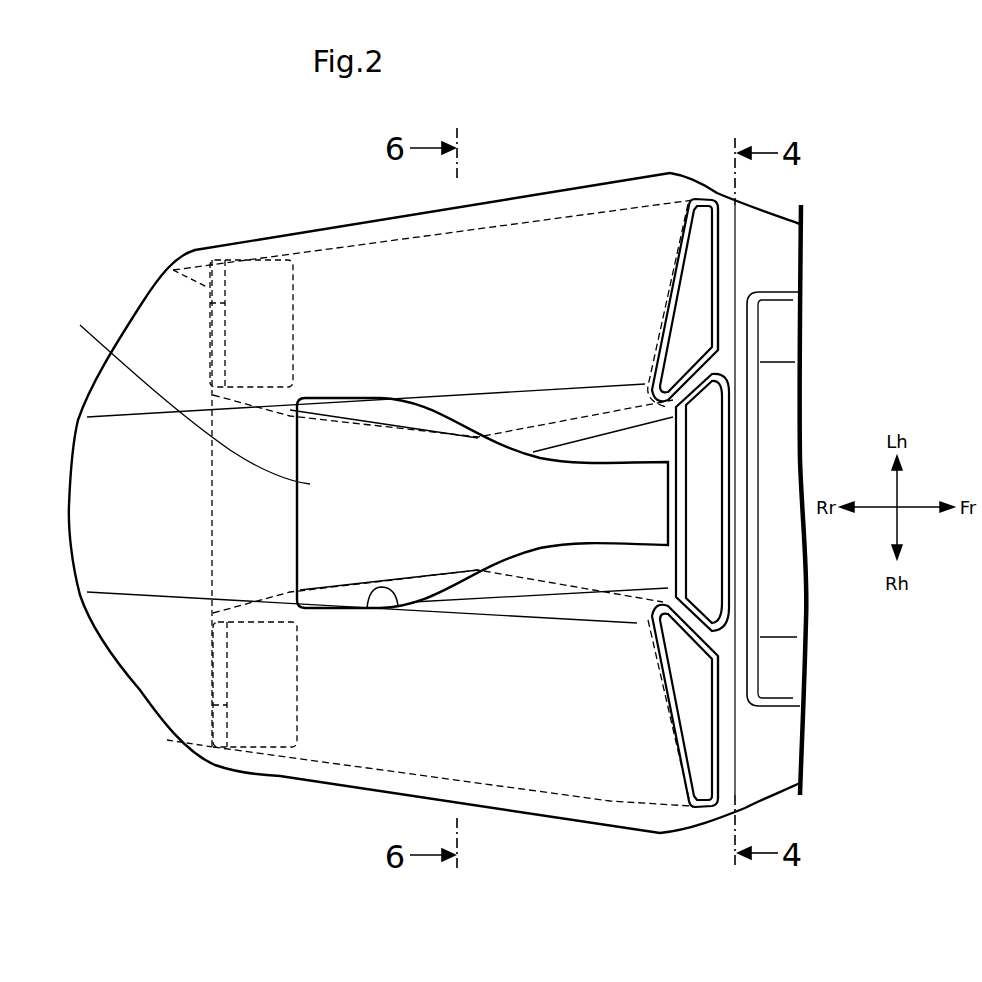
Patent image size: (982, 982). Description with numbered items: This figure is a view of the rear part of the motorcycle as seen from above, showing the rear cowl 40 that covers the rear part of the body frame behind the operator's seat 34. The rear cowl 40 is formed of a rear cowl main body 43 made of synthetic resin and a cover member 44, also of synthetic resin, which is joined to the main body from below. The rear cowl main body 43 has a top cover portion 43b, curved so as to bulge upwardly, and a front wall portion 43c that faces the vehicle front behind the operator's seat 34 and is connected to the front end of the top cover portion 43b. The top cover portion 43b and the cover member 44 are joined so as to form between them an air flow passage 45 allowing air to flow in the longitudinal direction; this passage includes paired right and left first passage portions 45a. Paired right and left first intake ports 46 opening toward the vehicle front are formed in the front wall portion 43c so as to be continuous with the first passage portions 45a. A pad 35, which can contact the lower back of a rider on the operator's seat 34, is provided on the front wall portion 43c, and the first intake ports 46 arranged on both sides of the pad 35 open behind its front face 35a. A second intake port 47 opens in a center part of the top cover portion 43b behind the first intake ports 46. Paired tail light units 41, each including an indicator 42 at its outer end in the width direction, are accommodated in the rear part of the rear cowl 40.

The operator's seat 34 is at (777, 462).
The pad 35 is at (683, 488).
The front face of the pad 35a is at (720, 572).
The rear cowl 40 is at (402, 503).
The tail light unit 41 is at (293, 338).
The indicator 42 is at (172, 268).
The rear cowl main body 43 is at (136, 295).
The top cover portion 43b is at (523, 203).
The front wall portion 43c is at (732, 372).
The cover member 44 is at (176, 397).
The air flow passage 45 is at (725, 503).
The first passage portion 45a is at (674, 332).
The first intake port 46 is at (702, 275).
The second intake port 47 is at (392, 595).